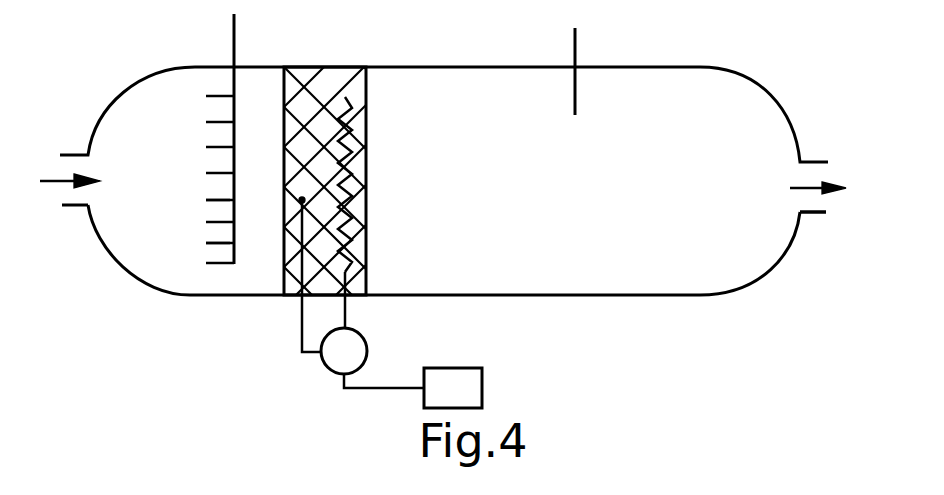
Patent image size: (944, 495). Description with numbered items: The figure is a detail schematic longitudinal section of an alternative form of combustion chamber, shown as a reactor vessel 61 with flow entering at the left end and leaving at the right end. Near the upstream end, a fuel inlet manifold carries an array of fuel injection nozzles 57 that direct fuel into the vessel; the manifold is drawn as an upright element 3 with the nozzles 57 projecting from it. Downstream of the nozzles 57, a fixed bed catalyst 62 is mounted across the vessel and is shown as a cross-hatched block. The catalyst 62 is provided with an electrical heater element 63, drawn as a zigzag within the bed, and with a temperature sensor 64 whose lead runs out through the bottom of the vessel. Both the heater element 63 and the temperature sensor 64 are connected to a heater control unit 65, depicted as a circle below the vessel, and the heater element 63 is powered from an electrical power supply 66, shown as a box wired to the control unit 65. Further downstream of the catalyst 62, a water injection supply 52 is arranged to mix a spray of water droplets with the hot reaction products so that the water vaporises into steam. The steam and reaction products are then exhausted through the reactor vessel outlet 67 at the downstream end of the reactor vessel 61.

The finned baffle plate 3 is at (232, 52).
The water injection supply 52 is at (578, 60).
The fuel injection nozzles 57 is at (212, 205).
The reactor vessel 61 is at (556, 298).
The fixed bed catalyst 62 is at (320, 84).
The electrical heater element 63 is at (350, 118).
The temperature sensor 64 is at (298, 200).
The heater control unit 65 is at (331, 370).
The electrical power supply 66 is at (482, 386).
The reactor vessel outlet 67 is at (806, 216).